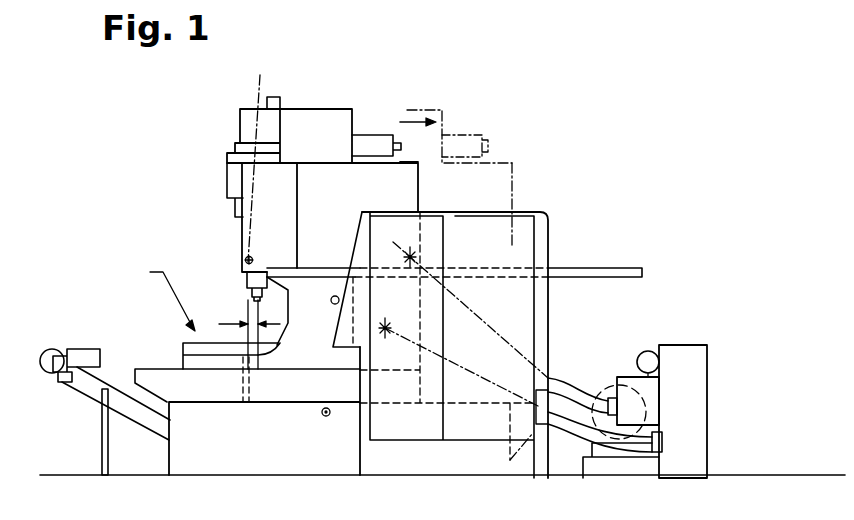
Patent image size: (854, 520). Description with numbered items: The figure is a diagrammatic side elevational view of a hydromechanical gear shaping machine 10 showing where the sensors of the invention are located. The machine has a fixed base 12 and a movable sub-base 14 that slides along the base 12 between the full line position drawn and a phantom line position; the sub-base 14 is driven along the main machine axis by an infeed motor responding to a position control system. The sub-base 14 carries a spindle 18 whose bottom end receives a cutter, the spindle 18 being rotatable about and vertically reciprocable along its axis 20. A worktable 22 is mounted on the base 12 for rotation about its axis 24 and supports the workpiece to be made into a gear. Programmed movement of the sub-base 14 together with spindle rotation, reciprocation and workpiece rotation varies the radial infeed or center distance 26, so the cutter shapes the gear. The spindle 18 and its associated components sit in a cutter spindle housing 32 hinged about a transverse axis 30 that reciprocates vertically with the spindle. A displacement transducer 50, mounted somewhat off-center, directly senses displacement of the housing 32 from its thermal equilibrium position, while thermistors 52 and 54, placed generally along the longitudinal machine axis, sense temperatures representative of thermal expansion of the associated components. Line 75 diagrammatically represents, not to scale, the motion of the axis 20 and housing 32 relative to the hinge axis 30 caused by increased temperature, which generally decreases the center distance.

The hydromechanical gear shaping machine 10 is at (170, 127).
The fixed base 12 is at (266, 460).
The movable sub-base 14 is at (348, 188).
The spindle 18 is at (270, 283).
The spindle axis 20 is at (246, 230).
The worktable 22 is at (182, 346).
The worktable axis 24 is at (250, 382).
The center distance 26 is at (262, 332).
The transverse axis 30 is at (258, 181).
The cutter spindle housing 32 is at (242, 250).
The displacement transducer 50 is at (242, 267).
The thermistor 52 is at (337, 296).
The thermistor 54 is at (323, 418).
The line 75 is at (252, 228).